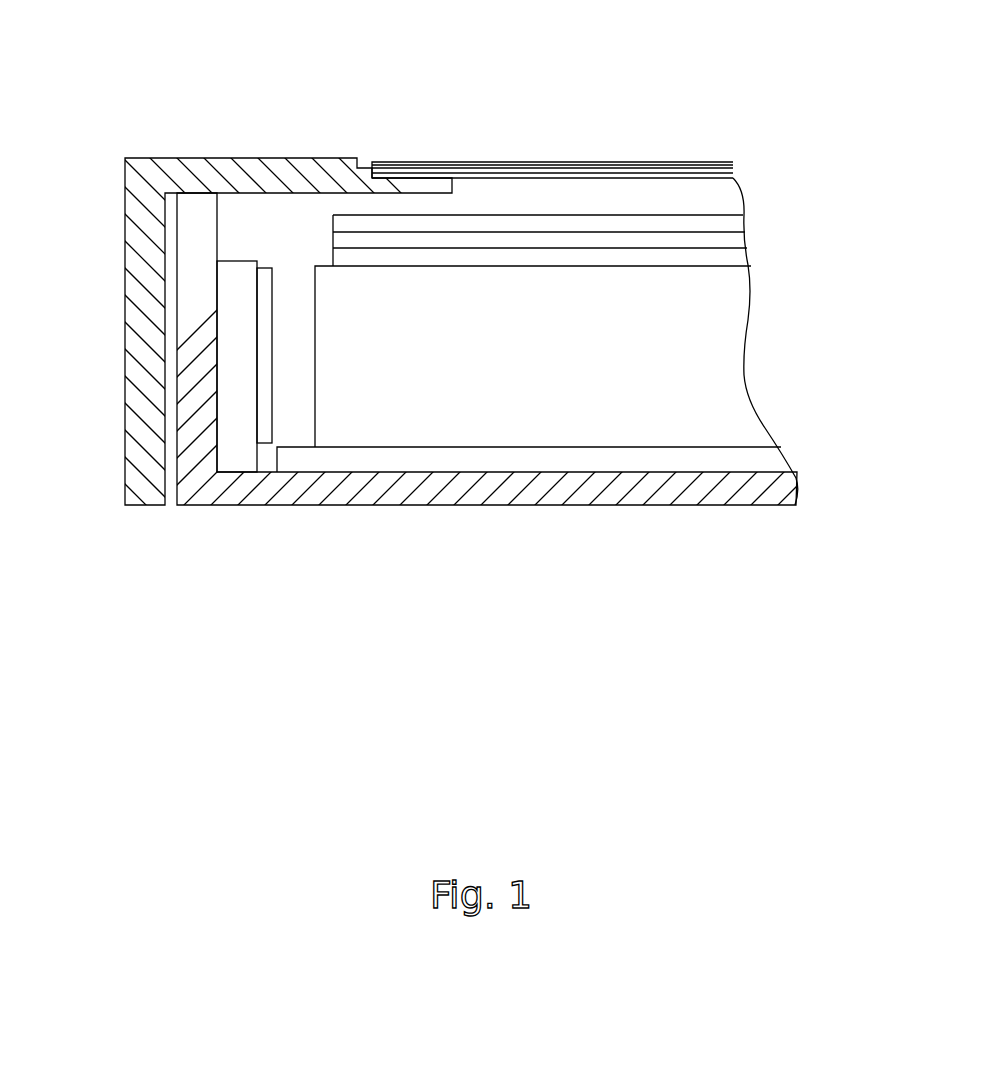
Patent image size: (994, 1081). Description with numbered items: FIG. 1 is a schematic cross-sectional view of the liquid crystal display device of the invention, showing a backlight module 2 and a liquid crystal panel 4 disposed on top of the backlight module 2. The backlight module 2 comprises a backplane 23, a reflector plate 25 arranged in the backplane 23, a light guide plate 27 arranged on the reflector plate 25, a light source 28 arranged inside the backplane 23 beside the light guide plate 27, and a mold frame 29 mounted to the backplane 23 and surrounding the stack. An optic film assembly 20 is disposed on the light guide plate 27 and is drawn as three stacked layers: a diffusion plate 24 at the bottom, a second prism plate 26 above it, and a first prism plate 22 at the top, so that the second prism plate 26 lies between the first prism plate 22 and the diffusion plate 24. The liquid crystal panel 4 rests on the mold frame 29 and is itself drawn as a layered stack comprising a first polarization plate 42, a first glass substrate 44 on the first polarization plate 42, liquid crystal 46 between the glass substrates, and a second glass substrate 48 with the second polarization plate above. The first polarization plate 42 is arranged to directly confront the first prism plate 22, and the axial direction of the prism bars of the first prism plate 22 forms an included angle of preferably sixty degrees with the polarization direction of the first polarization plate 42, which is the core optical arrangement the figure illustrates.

The backlight module 2 is at (98, 271).
The liquid crystal panel 4 is at (663, 52).
The optic film assembly 20 is at (862, 173).
The first prism plate 22 is at (720, 223).
The back plate 23 is at (427, 497).
The diffusion plate 24 is at (727, 258).
The reflective sheet 25 is at (562, 460).
The second prism plate 26 is at (727, 241).
The light guide plate 27 is at (673, 425).
The light source 28 is at (240, 408).
The frame 29 is at (142, 382).
The first polarization plate 42 is at (503, 177).
The second layer of touch panel 44 is at (537, 175).
The third layer of touch panel 46 is at (573, 167).
The cover layer of touch panel 48 is at (605, 162).